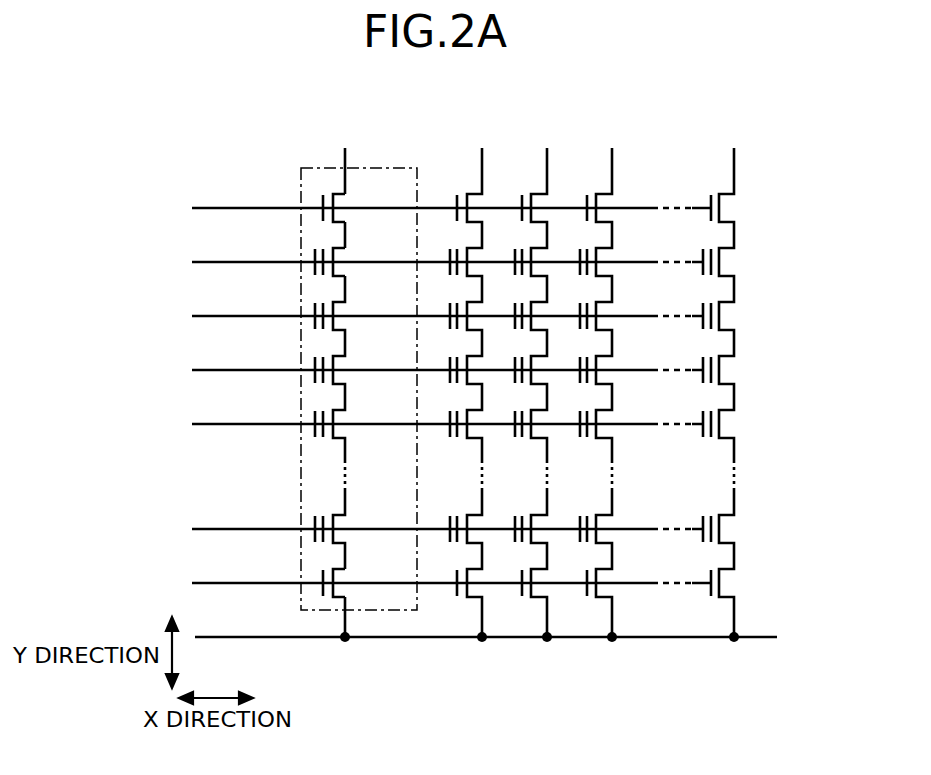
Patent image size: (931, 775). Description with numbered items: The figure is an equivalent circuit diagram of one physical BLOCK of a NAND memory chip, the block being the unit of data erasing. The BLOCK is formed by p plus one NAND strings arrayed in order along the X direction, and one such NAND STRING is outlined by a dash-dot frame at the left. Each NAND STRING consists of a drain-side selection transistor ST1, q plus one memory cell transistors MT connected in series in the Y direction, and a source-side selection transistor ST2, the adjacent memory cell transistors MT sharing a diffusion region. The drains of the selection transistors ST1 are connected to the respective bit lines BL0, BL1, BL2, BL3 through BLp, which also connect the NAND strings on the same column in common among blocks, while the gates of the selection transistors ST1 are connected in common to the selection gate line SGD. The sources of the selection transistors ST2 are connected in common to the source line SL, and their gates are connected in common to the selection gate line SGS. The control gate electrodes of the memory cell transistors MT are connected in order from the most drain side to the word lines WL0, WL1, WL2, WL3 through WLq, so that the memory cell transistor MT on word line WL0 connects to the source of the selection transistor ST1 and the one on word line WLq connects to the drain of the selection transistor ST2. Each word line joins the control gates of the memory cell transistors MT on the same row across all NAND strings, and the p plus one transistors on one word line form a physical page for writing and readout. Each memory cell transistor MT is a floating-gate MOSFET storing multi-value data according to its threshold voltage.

The selection transistor ST1 is at (342, 203).
The memory cell transistor MT is at (342, 257).
The selection transistor ST2 is at (344, 577).
The bit line BL0 is at (339, 379).
The bit line BL1 is at (475, 379).
The bit line BL2 is at (540, 379).
The bit line BL3 is at (605, 379).
The bit line BLp is at (727, 379).
The selection gate line SGD is at (451, 194).
The word line WL0 is at (447, 248).
The word line WL1 is at (447, 302).
The word line WL2 is at (447, 356).
The word line WL3 is at (447, 410).
The word line WLq is at (447, 515).
The selection gate line SGS is at (451, 569).
The source line SL is at (486, 627).
The NAND string NAND STRING is at (310, 168).
The physical block BLOCK is at (813, 673).